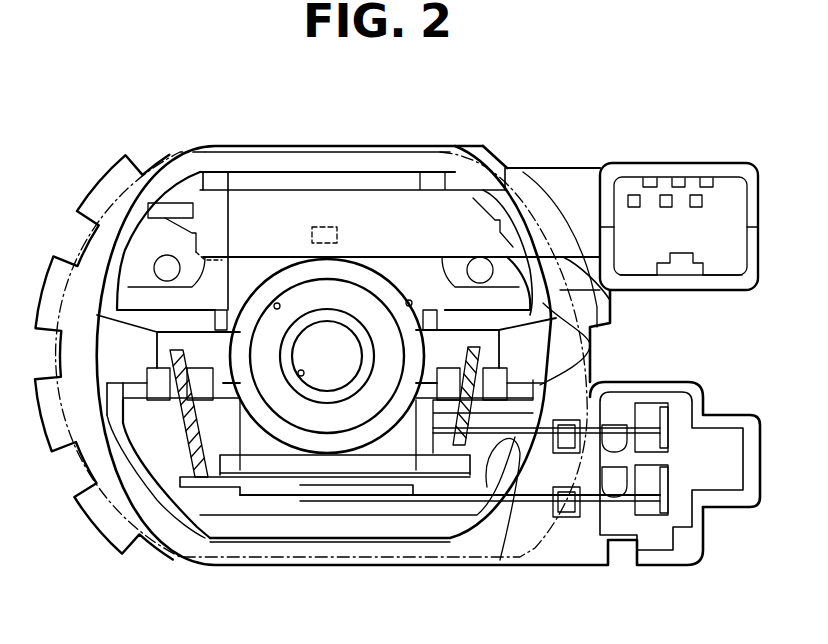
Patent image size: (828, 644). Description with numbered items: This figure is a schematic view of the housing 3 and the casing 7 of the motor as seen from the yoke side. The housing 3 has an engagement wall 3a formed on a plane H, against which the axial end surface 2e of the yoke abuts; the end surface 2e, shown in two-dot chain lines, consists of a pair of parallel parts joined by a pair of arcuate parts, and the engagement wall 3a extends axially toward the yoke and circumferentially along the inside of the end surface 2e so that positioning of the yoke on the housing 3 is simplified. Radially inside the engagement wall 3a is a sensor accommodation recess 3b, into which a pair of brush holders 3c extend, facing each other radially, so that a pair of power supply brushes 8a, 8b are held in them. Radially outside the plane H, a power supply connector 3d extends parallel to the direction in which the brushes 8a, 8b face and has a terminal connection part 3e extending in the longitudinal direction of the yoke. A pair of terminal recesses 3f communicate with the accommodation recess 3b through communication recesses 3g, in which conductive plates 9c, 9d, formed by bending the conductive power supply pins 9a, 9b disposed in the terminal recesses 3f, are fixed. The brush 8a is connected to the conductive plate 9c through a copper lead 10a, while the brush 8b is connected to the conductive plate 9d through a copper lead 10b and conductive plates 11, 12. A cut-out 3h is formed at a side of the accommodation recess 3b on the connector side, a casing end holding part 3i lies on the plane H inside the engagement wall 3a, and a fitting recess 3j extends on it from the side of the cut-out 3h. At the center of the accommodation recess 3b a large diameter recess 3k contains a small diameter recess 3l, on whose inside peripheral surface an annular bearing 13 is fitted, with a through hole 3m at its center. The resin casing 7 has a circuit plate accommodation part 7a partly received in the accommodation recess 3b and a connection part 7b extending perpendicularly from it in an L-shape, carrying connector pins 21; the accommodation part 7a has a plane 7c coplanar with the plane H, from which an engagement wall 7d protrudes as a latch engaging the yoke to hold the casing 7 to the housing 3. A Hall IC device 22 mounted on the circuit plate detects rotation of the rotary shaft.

The housing 3 is at (316, 144).
The engagement wall 3a is at (110, 293).
The sensor accommodation recess 3b is at (432, 285).
The brush holders 3c is at (197, 410).
The power supply connector 3d is at (622, 552).
The terminal connection part 3e is at (752, 462).
The terminal recesses 3f is at (652, 470).
The communication recesses 3g is at (543, 443).
The cut-out 3h is at (613, 308).
The casing end holding part 3i is at (213, 283).
The small diameter recess 3l is at (274, 305).
The large diameter recess 3k is at (412, 304).
The fitting recess 3j is at (142, 200).
The through hole 3m is at (303, 377).
The casing 7 is at (572, 164).
The circuit plate accommodation part 7a is at (383, 200).
The connection part 7b is at (752, 245).
The plane 7c is at (398, 242).
The engagement wall 7d is at (497, 217).
The power supply brush 8a is at (488, 353).
The power supply brush 8b is at (208, 388).
The conductive power supply pin 9a is at (665, 420).
The conductive power supply pin 9b is at (703, 527).
The conductive plate 9c is at (615, 437).
The conductive plate 9d is at (613, 517).
The copper lead 10a is at (470, 382).
The copper lead 10b is at (160, 375).
The conductive plate 11 is at (193, 483).
The conductive plate 12 is at (393, 493).
The annular bearing 13 is at (377, 400).
The connector pins 21 is at (694, 210).
The Hall IC device 22 is at (312, 237).
The axial end surface 2e is at (359, 553).
The plane H is at (243, 550).